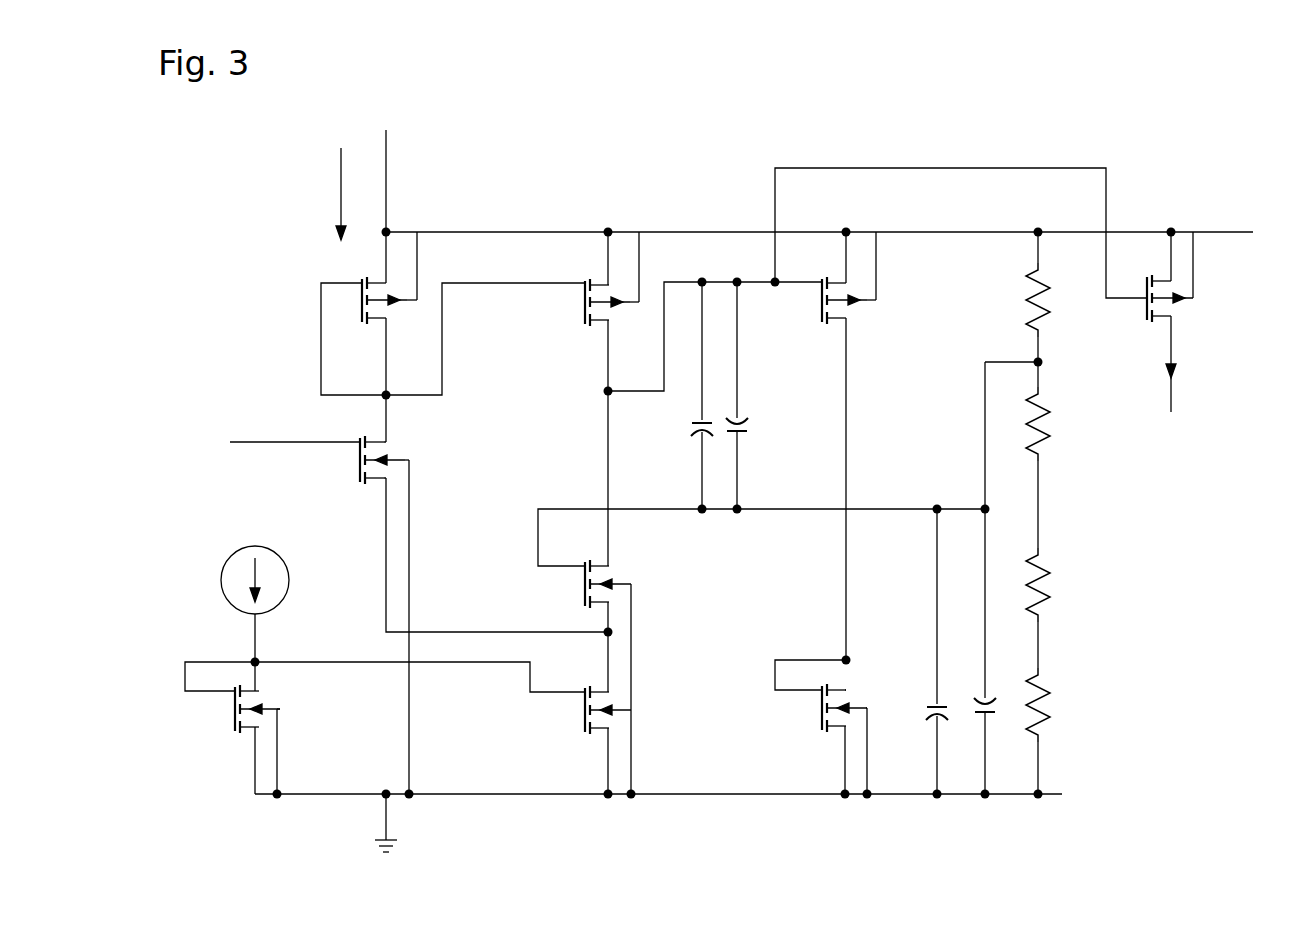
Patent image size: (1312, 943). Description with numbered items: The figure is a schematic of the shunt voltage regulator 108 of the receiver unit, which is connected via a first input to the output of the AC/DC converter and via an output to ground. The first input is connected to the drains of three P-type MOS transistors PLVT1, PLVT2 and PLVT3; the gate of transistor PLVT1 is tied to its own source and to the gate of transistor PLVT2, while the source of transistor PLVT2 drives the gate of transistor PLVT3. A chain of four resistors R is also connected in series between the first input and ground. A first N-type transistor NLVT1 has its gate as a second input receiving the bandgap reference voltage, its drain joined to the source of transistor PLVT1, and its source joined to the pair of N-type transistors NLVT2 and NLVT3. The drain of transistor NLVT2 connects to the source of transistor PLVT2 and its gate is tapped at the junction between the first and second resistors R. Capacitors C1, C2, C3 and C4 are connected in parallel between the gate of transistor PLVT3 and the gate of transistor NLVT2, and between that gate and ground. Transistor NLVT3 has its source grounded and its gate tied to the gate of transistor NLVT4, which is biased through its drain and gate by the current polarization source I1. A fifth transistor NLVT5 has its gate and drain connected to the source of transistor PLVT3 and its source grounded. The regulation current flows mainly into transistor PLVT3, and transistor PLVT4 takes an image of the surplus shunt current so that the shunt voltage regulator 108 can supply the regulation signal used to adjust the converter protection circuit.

The shunt voltage regulator 108 is at (1100, 143).
The P-type MOS transistor PLVT1 is at (452, 313).
The P-type MOS transistor PLVT2 is at (682, 311).
The P-type MOS transistor PLVT3 is at (827, 446).
The MOS transistor PLVT4 is at (1200, 322).
The N-type MOS transistor NLVT1 is at (419, 594).
The N-type MOS transistor NLVT2 is at (760, 592).
The N-type MOS transistor NLVT3 is at (426, 728).
The fourth transistor NLVT4 is at (274, 704).
The fifth transistor NLVT5 is at (839, 727).
The capacitor C1 is at (694, 395).
The capacitor C2 is at (749, 395).
The capacitor C3 is at (930, 651).
The capacitor C4 is at (992, 578).
The resistor R is at (1024, 513).
The current polarization source I1 is at (264, 580).